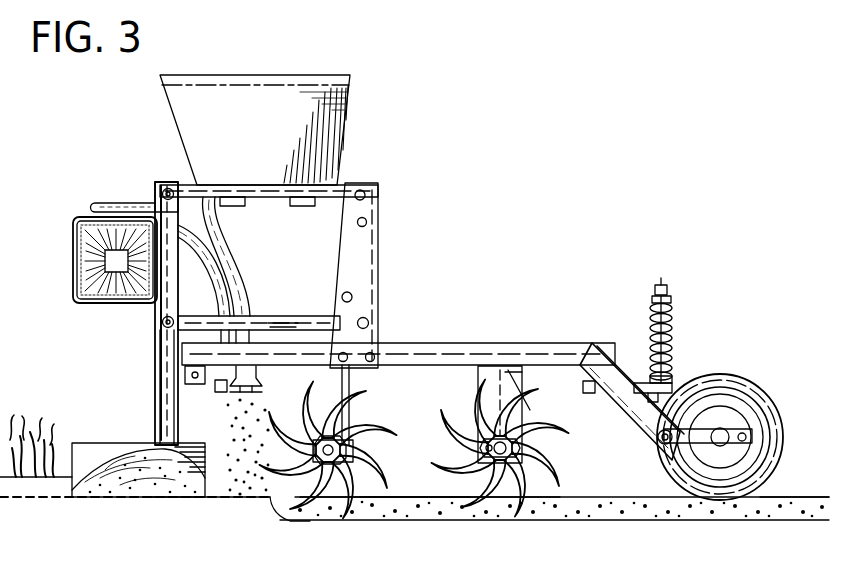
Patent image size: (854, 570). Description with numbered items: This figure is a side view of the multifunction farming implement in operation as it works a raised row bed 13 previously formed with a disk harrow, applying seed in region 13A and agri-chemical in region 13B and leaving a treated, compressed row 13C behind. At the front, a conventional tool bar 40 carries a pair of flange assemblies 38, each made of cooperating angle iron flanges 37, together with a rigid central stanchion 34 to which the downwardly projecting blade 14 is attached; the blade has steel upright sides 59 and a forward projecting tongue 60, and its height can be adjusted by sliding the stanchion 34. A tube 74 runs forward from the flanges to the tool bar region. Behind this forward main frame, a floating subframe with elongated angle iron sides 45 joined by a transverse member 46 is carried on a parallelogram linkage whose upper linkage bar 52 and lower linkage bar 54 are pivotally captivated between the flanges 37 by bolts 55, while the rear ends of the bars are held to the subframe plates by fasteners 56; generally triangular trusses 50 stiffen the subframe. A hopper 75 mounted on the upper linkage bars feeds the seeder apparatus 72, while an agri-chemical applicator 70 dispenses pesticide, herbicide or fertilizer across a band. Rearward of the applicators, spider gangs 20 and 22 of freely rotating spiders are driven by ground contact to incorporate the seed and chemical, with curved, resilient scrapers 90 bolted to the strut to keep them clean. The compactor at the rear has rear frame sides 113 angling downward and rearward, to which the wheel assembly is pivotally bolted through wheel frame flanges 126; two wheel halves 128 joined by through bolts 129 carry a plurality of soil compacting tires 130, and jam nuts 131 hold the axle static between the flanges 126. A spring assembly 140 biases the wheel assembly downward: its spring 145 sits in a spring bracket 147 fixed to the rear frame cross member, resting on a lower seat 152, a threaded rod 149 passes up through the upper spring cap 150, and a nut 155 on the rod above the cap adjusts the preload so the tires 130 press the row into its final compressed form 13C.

The raised row bed 13 is at (20, 483).
The seed application region 13A is at (235, 500).
The agri-chemical application region 13B is at (410, 482).
The treated, compressed row 13C is at (792, 482).
The blade 14 is at (62, 437).
The spider gang 20 is at (318, 526).
The spider gang 22 is at (492, 523).
The central stanchion 34 is at (178, 347).
The angle iron flanges 37 is at (155, 195).
The flange assembly 38 is at (148, 178).
The tool bar 40 is at (78, 262).
The subframe side 45 is at (468, 343).
The transverse member 46 is at (185, 375).
The triangular truss 50 is at (393, 272).
The upper linkage bar 52 is at (348, 185).
The lower linkage bar 54 is at (283, 318).
The bolts 55 is at (168, 188).
The bolts 56 is at (380, 190).
The upright sides 59 is at (85, 450).
The forward projecting tongue 60 is at (56, 500).
The agri-chemical applicator 70 is at (215, 388).
The seeder apparatus 72 is at (258, 382).
The tube 74 is at (92, 207).
The hopper 75 is at (262, 105).
The scrapers 90 is at (375, 420).
The rear frame sides 113 is at (622, 418).
The wheel frame flanges 126 is at (780, 455).
The wheel halves 128 is at (764, 430).
The through bolts 129 is at (755, 413).
The soil compacting tires 130 is at (752, 395).
The jam nuts 131 is at (708, 492).
The spring assembly 140 is at (652, 318).
The spring 145 is at (672, 330).
The spring bracket 147 is at (672, 390).
The threaded rod 149 is at (660, 285).
The upper spring cap 150 is at (652, 310).
The spring seat 152 is at (672, 370).
The nut 155 is at (652, 298).